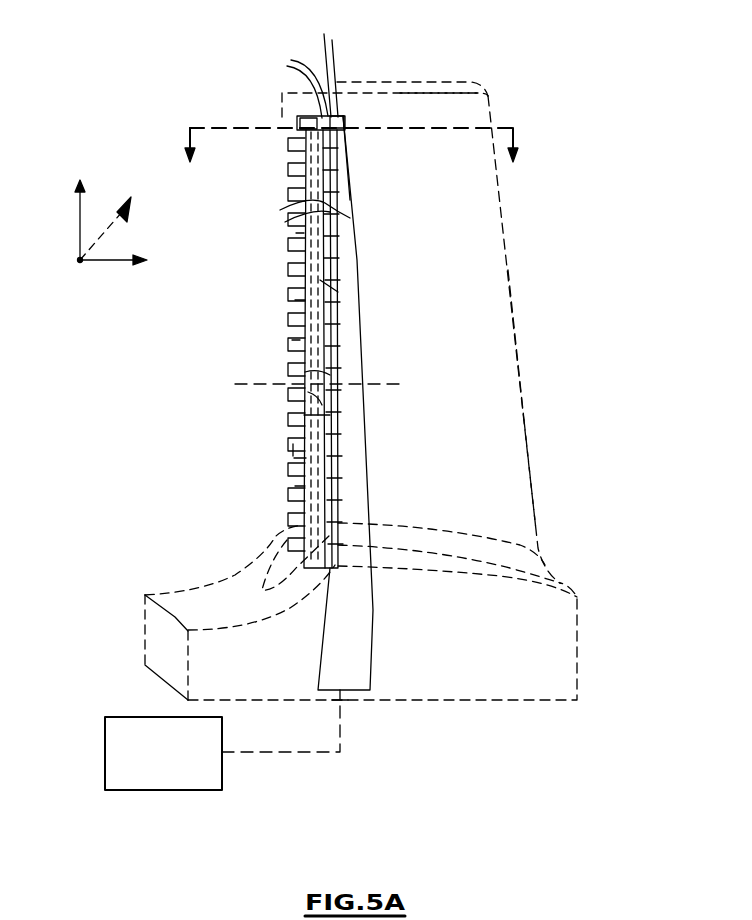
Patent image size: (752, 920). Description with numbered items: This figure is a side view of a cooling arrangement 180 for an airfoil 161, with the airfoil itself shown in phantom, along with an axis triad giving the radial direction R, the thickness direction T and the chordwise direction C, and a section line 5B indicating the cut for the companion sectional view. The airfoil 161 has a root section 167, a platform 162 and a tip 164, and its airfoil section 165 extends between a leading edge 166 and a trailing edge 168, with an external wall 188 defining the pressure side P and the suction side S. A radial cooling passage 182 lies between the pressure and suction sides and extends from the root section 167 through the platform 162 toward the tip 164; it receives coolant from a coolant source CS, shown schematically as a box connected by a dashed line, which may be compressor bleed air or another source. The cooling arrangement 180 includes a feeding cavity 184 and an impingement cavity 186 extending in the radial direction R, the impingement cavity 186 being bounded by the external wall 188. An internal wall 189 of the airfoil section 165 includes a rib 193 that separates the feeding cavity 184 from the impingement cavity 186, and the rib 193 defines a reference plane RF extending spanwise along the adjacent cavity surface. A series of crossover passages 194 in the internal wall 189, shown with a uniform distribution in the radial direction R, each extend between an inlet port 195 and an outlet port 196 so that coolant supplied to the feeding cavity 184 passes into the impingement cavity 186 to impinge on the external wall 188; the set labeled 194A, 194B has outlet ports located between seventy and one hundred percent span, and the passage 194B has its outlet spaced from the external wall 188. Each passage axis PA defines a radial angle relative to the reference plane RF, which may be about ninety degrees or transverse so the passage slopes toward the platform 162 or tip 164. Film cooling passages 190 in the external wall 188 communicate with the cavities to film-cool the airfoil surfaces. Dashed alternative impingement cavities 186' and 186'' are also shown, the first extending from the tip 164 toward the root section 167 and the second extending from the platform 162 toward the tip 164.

The airfoil 161 is at (190, 90).
The platform 162 is at (175, 617).
The tip 164 is at (413, 93).
The airfoil section 165 is at (280, 340).
The leading edge 166 is at (296, 262).
The root section 167 is at (573, 610).
The trailing edge 168 is at (503, 257).
The cooling arrangement 180 is at (366, 102).
The radial cooling passage 182 is at (374, 654).
The feeding cavity 184 is at (349, 198).
The impingement cavity 186 is at (257, 344).
The impingement cavity 186' is at (255, 304).
The impingement cavity 186'' is at (254, 495).
The external wall 188 is at (298, 134).
The internal wall 189 is at (327, 170).
The film cooling passage 190 is at (295, 462).
The rib 193 is at (330, 290).
The crossover passage 194 is at (287, 66).
The crossover passage 194A is at (340, 22).
The crossover passage 194B is at (335, 78).
The inlet port 195 is at (330, 212).
The outlet port 196 is at (296, 233).
The section line 5B is at (350, 140).
The coolant source CS is at (105, 752).
The passage axis PA is at (250, 383).
The reference plane RF is at (330, 415).
The suction side S is at (520, 352).
The pressure side P is at (505, 405).
The radial direction R is at (77, 210).
The thickness direction T is at (114, 215).
The chordwise direction C is at (122, 260).